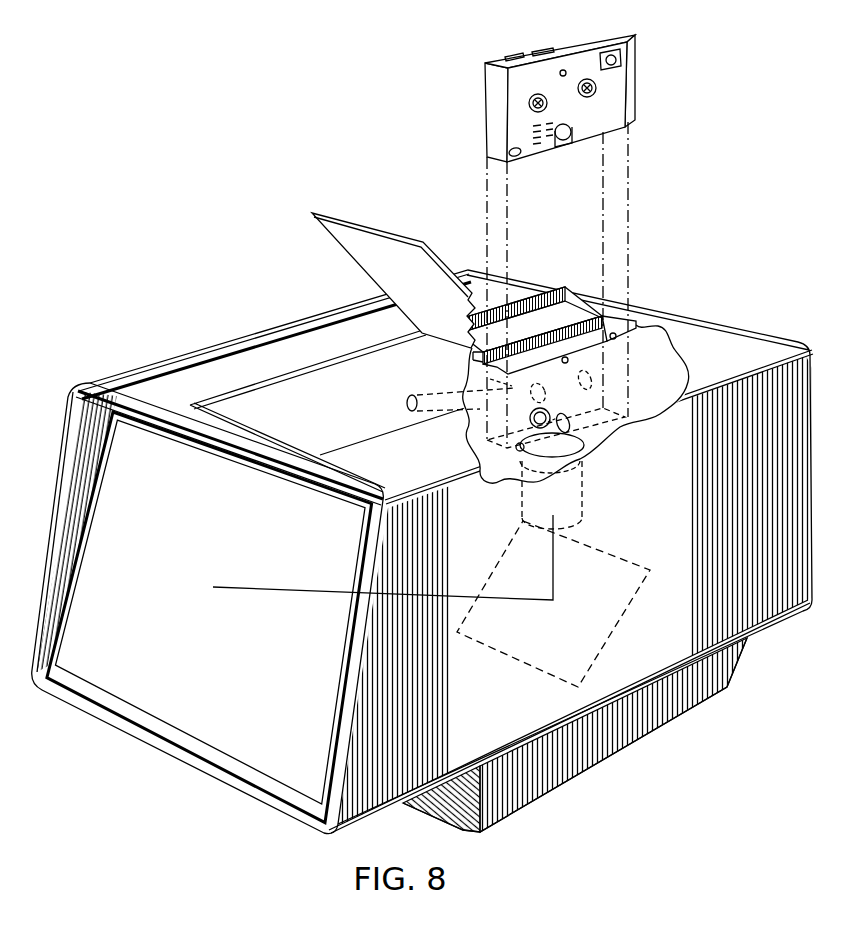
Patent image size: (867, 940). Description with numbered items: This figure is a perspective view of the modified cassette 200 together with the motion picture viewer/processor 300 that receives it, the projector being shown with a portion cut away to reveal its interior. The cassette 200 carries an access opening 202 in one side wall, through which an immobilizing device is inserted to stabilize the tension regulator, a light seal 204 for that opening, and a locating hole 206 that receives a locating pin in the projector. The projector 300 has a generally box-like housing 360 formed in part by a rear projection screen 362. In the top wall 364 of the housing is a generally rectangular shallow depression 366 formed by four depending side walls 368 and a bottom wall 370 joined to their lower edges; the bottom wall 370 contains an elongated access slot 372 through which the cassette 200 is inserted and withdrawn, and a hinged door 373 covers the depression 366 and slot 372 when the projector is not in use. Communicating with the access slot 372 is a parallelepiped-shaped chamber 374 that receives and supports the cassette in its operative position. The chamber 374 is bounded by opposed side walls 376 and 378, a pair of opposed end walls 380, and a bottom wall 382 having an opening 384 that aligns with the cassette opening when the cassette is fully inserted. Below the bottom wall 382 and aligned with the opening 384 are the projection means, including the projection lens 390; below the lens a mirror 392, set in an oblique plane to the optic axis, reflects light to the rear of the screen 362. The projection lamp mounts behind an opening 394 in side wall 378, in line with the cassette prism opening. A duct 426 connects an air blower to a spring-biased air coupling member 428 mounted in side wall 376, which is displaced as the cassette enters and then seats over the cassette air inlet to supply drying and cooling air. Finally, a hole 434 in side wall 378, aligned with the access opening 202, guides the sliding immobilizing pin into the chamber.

The cassette 200 is at (648, 87).
The access opening 202 is at (619, 67).
The light seal 204 is at (609, 50).
The locating hole 206 is at (565, 70).
The motion picture viewer/processor 300 is at (272, 284).
The housing 360 is at (84, 386).
The rear projection screen 362 is at (102, 665).
The top wall 364 is at (258, 358).
The depression 366 is at (575, 300).
The depending side walls 368 is at (540, 292).
The bottom wall 370 is at (543, 305).
The access slot 372 is at (618, 336).
The hinged door 373 is at (345, 235).
The chamber 374 is at (611, 362).
The chamber side wall 376 is at (477, 355).
The chamber side wall 378 is at (630, 407).
The end walls 380 is at (490, 379).
The bottom wall 382 is at (483, 470).
The opening 384 is at (586, 441).
The projection lens 390 is at (581, 498).
The mirror 392 is at (600, 560).
The opening 394 is at (562, 418).
The duct 426 is at (406, 403).
The air coupling member 428 is at (544, 396).
The hole 434 is at (630, 321).